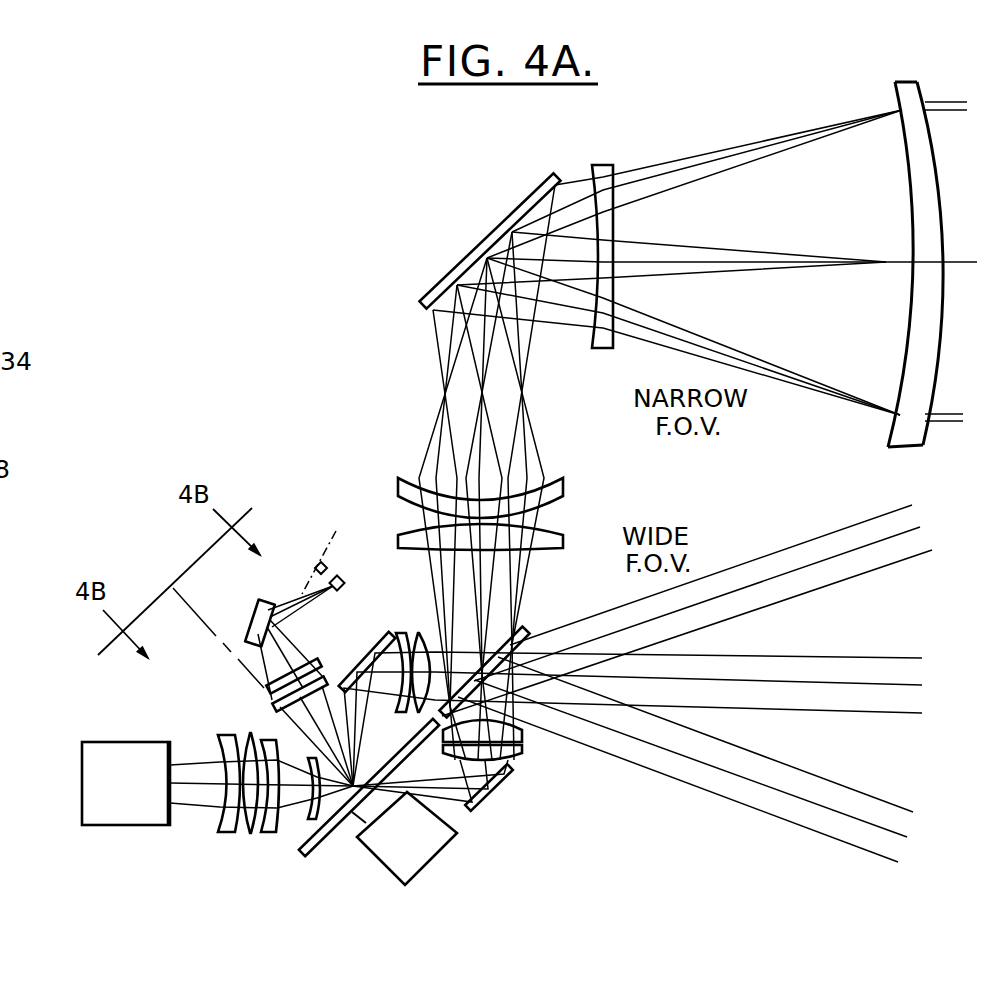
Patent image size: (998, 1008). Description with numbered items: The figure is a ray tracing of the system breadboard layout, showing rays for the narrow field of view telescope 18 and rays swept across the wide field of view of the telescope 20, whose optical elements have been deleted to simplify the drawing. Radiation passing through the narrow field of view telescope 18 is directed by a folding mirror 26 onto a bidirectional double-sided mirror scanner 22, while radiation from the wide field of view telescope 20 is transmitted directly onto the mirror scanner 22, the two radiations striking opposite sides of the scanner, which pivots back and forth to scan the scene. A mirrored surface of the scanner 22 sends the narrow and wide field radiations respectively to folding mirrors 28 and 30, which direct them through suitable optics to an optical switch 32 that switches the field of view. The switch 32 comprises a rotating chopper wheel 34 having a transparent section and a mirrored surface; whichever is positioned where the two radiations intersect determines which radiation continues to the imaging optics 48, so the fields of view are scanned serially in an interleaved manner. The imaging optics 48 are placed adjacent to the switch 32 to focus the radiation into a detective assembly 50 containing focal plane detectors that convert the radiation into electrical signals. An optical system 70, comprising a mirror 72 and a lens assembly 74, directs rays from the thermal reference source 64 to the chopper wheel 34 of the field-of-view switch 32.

The narrow field of view telescope 18 is at (893, 93).
The wide field of view telescope 20 is at (774, 528).
The bidirectional double-sided mirror scanner 22 is at (522, 632).
The folding mirror 26 is at (490, 226).
The folding mirror 28 is at (389, 633).
The folding mirror 30 is at (505, 782).
The optical switch 32 is at (362, 872).
The chopper wheel 34 is at (323, 848).
The imaging optics 48 is at (297, 829).
The detective assembly 50 is at (82, 779).
The thermal reference source 64 is at (338, 578).
The optical system 70 is at (334, 662).
The mirror 72 is at (252, 620).
The lens assembly 74 is at (262, 725).